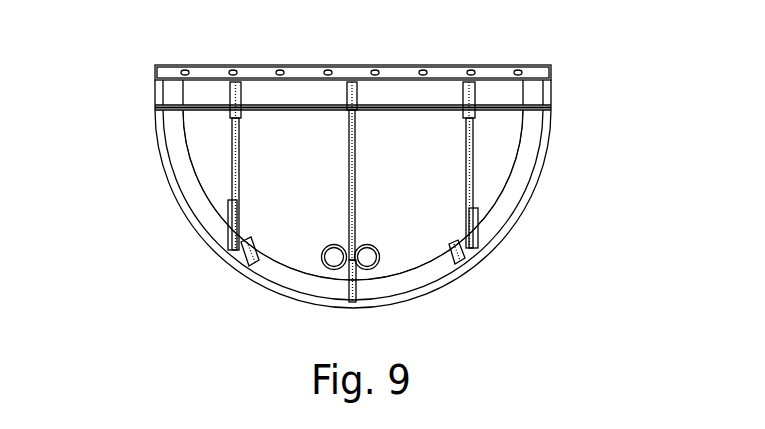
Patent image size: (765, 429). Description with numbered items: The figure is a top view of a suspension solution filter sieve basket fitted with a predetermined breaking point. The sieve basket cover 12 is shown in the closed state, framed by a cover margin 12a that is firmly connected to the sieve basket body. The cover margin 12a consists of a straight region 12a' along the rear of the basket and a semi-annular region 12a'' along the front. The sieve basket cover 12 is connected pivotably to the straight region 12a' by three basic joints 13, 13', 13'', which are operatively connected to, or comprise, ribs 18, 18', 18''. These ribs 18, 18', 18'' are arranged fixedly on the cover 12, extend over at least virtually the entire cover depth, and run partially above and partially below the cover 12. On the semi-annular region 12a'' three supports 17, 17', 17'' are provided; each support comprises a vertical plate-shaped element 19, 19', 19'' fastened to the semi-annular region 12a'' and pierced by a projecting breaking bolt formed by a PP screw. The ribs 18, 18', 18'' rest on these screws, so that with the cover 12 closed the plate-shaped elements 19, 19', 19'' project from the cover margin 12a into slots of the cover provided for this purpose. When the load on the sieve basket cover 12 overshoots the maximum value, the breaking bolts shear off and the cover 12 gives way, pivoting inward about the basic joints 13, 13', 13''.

The sieve basket cover 12 is at (292, 245).
The cover margin 12a is at (397, 111).
The straight region 12a' is at (353, 61).
The semi-annular region 12a'' is at (353, 228).
The basic joint 13 is at (276, 113).
The basic joint 13' is at (395, 113).
The basic joint 13'' is at (530, 134).
The support 17 is at (221, 184).
The support 17' is at (387, 222).
The support 17'' is at (528, 190).
The rib 18 is at (276, 173).
The rib 18' is at (395, 173).
The rib 18'' is at (533, 189).
The plate-shaped element 19 is at (199, 244).
The plate-shaped element 19' is at (347, 299).
The plate-shaped element 19'' is at (511, 249).